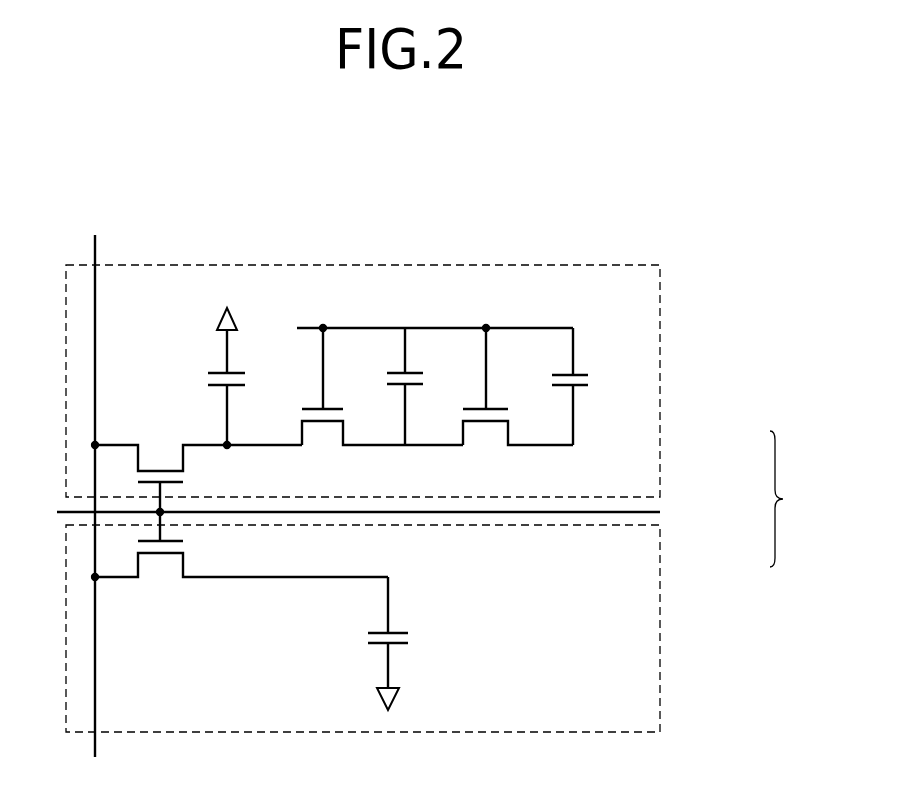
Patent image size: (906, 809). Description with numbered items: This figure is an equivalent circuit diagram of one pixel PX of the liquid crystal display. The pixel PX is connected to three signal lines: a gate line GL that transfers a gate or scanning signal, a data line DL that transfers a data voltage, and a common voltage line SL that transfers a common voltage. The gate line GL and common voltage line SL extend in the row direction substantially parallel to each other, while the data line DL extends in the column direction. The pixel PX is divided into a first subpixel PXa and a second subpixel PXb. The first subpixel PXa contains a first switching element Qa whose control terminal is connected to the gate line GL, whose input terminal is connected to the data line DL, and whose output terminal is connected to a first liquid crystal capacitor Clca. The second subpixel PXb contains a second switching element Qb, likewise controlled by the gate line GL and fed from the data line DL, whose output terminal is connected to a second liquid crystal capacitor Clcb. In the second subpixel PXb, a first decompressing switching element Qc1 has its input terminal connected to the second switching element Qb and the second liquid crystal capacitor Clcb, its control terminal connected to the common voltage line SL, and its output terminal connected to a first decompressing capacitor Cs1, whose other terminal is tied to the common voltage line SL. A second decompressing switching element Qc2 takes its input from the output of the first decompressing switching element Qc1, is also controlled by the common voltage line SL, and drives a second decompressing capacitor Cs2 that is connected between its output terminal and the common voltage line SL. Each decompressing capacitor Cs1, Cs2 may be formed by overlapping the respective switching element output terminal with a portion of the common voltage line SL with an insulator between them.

The data line DL is at (96, 478).
The gate line GL is at (337, 513).
The common voltage line SL is at (416, 330).
The pixel PX is at (798, 499).
The first subpixel PXa is at (660, 563).
The second subpixel PXb is at (660, 431).
The first switching element Qa is at (240, 559).
The second switching element Qb is at (197, 469).
The first decompressing switching element Qc1 is at (381, 406).
The second decompressing switching element Qc2 is at (518, 406).
The first liquid crystal capacitor Clca is at (418, 643).
The second liquid crystal capacitor Clcb is at (197, 378).
The first decompressing capacitor Cs1 is at (429, 386).
The second decompressing capacitor Cs2 is at (596, 386).